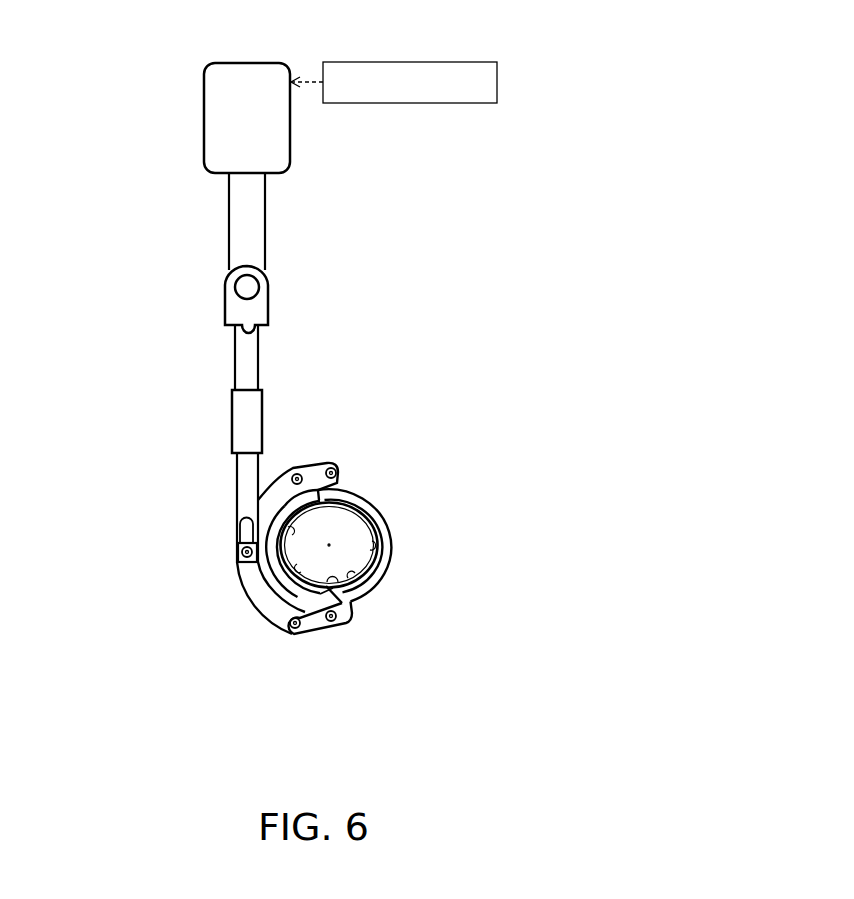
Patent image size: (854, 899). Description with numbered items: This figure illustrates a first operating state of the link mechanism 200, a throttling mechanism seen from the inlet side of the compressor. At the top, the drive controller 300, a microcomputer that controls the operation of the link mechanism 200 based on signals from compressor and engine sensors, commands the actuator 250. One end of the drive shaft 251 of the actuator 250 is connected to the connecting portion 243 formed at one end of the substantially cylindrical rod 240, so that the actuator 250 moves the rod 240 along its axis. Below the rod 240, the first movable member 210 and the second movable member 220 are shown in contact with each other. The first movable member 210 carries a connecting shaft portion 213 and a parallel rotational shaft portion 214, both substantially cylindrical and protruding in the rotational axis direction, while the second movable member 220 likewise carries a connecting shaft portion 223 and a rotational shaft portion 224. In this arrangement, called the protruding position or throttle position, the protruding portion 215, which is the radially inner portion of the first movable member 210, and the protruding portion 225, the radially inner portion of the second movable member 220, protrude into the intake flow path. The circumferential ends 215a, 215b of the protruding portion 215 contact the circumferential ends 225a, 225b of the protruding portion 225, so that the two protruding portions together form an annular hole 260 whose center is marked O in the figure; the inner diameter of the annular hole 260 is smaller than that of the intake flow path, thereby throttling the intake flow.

The link mechanism 200 is at (84, 56).
The drive controller 300 is at (478, 61).
The actuator 250 is at (258, 124).
The drive shaft 251 is at (258, 236).
The connecting portion 243 is at (257, 309).
The rod 240 is at (258, 363).
The first movable member 210 is at (300, 465).
The connecting shaft portion 213 is at (297, 471).
The rotational shaft portion 214 is at (338, 473).
The protruding portion 215 is at (293, 575).
The circumferential end 215a is at (328, 590).
The circumferential end 215b is at (257, 520).
The second movable member 220 is at (365, 607).
The connecting shaft portion 223 is at (290, 625).
The rotational shaft portion 224 is at (340, 614).
The protruding portion 225 is at (372, 545).
The circumferential end 225a is at (326, 509).
The circumferential end 225b is at (352, 577).
The annular hole 260 is at (243, 548).
The center axis O is at (328, 546).